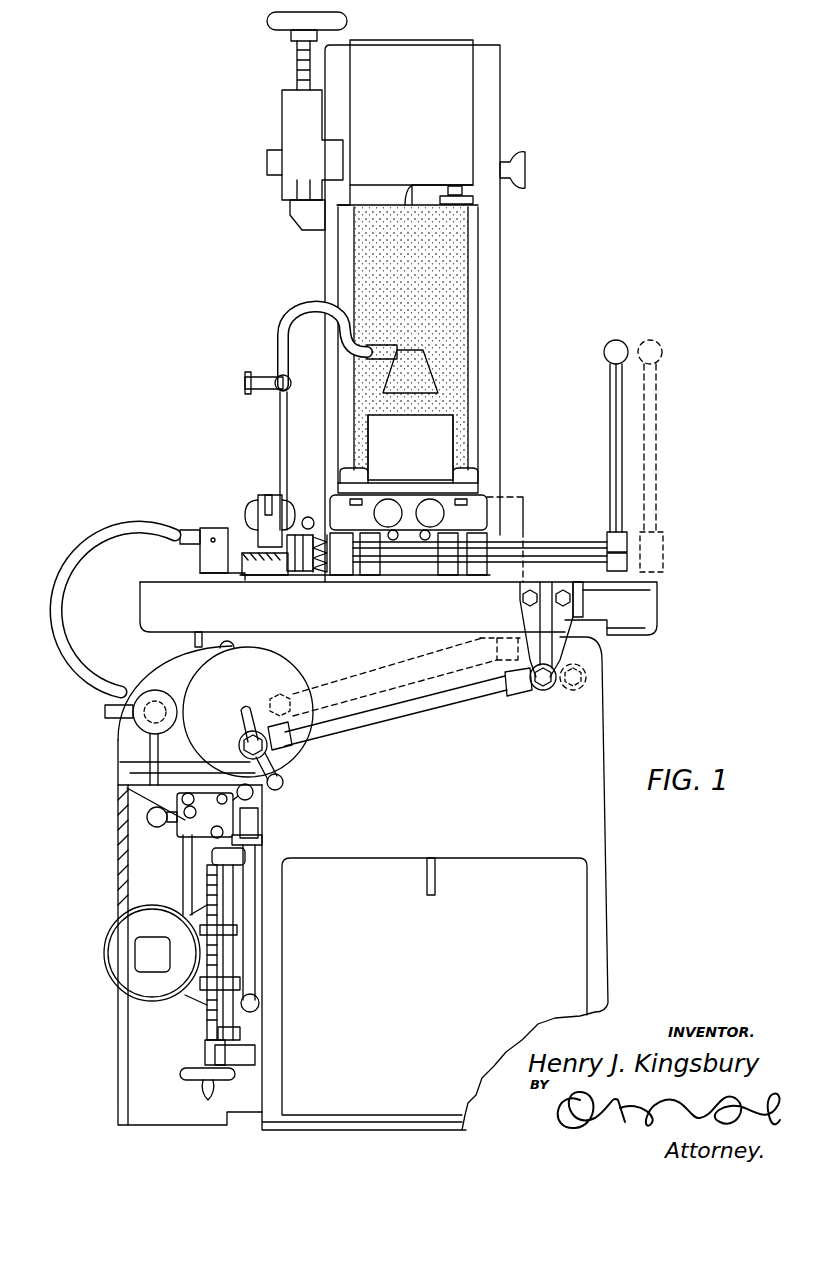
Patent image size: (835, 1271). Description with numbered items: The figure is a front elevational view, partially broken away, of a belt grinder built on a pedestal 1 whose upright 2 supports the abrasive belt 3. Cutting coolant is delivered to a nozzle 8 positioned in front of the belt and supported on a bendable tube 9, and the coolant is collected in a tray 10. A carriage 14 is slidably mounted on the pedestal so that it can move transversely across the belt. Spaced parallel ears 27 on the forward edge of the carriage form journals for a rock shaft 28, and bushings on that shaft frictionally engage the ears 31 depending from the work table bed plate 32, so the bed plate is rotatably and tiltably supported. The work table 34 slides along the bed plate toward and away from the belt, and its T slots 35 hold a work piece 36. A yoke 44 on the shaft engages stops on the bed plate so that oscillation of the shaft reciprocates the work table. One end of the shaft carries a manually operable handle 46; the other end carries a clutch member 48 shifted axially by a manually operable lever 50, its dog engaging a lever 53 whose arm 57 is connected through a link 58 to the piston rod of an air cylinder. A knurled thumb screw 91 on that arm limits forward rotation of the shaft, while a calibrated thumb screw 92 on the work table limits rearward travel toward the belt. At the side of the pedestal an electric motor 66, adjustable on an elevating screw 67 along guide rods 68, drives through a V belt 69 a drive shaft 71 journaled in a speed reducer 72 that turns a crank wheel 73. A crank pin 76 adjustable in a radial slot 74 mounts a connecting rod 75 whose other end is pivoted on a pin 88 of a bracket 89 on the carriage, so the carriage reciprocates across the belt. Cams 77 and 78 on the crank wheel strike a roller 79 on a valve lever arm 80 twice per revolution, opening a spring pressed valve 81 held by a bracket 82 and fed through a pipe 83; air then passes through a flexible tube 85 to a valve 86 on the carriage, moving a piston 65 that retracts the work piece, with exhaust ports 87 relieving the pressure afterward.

The pedestal 1 is at (597, 733).
The upright 2 is at (500, 252).
The abrasive belt 3 is at (462, 296).
The nozzle 8 is at (430, 382).
The bendable tube 9 is at (281, 320).
The tray 10 is at (658, 614).
The carriage 14 is at (584, 600).
The ears 27 is at (342, 575).
The rock shaft 28 is at (547, 551).
The ears 31 is at (450, 570).
The work table bed plate 32 is at (462, 525).
The work table 34 is at (487, 506).
The T slots 35 is at (482, 492).
The work piece 36 is at (455, 452).
The yoke 44 is at (393, 530).
The manually operable handle 46 is at (612, 432).
The clutch member 48 is at (310, 570).
The manually operable lever 50 is at (302, 516).
The lever 53 is at (268, 550).
The arm 57 is at (262, 505).
The link 58 is at (270, 495).
The piston 65 is at (224, 550).
The electric motor 66 is at (155, 1000).
The elevating screw 67 is at (207, 1023).
The guide rods 68 is at (234, 1027).
The V belt 69 is at (118, 886).
The drive shaft 71 is at (130, 726).
The speed reducer 72 is at (148, 738).
The crank wheel 73 is at (300, 749).
The radial slot 74 is at (240, 748).
The connecting rod 75 is at (395, 716).
The crank pin 76 is at (244, 741).
The cam 77 is at (230, 646).
The cam 78 is at (284, 780).
The roller 79 is at (235, 801).
The valve lever arm 80 is at (242, 824).
The spring pressed valve 81 is at (198, 822).
The bracket 82 is at (190, 853).
The pipe 83 is at (262, 936).
The flexible tube 85 is at (56, 622).
The valve 86 is at (212, 528).
The exhaust ports 87 is at (212, 539).
The pin 88 is at (546, 692).
The bracket 89 is at (497, 653).
The knurled thumb screw 91 is at (282, 572).
The calibrated thumb screw 92 is at (425, 508).